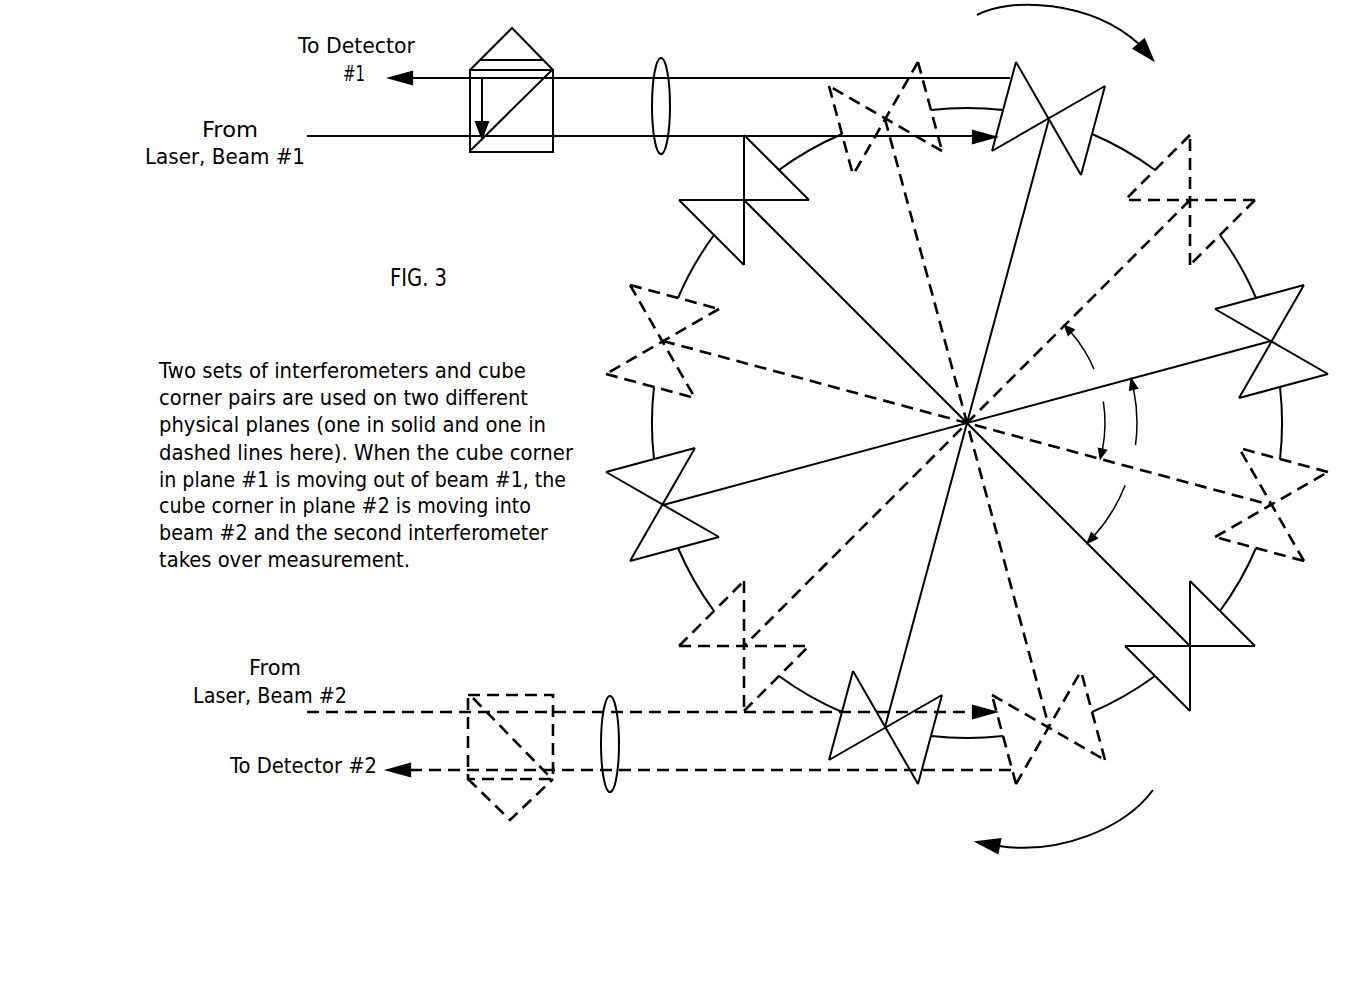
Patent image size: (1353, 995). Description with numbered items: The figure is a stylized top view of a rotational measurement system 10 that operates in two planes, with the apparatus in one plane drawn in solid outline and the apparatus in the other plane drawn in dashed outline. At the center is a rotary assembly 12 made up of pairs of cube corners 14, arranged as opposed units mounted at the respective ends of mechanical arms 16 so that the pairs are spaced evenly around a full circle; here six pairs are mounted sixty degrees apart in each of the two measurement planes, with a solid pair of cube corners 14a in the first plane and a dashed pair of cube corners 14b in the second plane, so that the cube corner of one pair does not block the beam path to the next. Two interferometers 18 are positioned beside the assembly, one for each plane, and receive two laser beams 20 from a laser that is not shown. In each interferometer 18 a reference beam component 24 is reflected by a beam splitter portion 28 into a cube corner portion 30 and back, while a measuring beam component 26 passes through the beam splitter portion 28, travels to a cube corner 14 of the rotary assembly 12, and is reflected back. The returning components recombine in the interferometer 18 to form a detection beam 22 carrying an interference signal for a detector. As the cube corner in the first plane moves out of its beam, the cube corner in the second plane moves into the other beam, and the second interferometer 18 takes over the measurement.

The rotational measurement system 10 is at (267, 263).
The rotary assembly 12 is at (1195, 792).
The cube corners 14 is at (967, 418).
The cube corner pair in first plane 14a is at (1010, 65).
The cube corner pair in second plane 14b is at (1028, 760).
The mechanical arms 16 is at (1015, 240).
The interferometers 18 is at (515, 168).
The laser beams 20 is at (353, 137).
The detection beams 22 is at (452, 79).
The reference beam component 24 is at (513, 58).
The measuring beam component 26 is at (662, 60).
The beam splitter portion 28 is at (492, 152).
The cube corner portion 30 is at (496, 44).